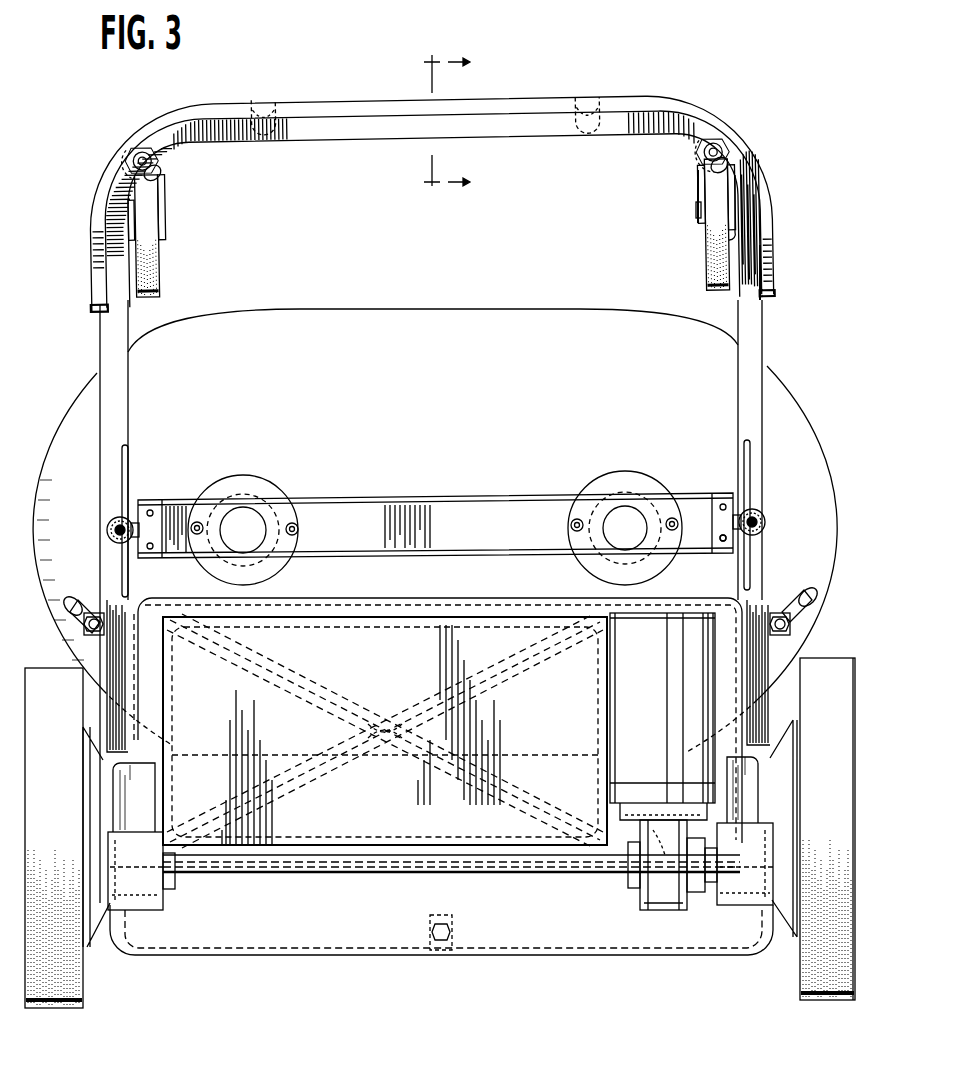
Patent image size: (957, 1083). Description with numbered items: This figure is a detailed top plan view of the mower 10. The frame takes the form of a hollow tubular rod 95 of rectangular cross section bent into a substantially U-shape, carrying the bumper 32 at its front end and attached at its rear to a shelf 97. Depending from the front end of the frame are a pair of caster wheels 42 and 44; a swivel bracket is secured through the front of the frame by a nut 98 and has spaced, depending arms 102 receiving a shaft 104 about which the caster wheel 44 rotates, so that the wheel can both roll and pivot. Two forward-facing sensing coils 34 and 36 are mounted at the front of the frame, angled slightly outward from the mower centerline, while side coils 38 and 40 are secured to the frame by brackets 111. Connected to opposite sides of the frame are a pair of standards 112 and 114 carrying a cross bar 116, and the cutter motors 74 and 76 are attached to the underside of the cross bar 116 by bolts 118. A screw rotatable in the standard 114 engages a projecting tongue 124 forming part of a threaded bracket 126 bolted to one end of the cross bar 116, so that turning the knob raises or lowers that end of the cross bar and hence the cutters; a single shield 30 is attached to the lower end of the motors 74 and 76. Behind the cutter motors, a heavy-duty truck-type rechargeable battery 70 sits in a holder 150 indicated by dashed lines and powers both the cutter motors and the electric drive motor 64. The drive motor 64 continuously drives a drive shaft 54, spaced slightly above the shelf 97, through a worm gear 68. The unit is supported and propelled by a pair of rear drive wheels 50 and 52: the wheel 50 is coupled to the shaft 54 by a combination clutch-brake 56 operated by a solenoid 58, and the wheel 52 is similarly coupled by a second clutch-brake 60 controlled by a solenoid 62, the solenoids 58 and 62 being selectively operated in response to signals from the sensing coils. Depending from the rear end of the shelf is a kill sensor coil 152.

The mower 10 is at (794, 92).
The shield 30 is at (792, 395).
The bumper 32 is at (497, 103).
The sensing coil 34 is at (277, 122).
The sensing coil 36 is at (578, 128).
The side coil 38 is at (92, 610).
The side coil 40 is at (788, 608).
The caster wheel 42 is at (158, 282).
The caster wheel 44 is at (710, 266).
The rear drive wheel 50 is at (76, 1010).
The rear drive wheel 52 is at (812, 968).
The drive shaft 54 is at (578, 880).
The clutch-brake 56 is at (164, 902).
The solenoid 58 is at (144, 806).
The clutch-brake 60 is at (743, 900).
The solenoid 62 is at (750, 801).
The electric drive motor 64 is at (652, 691).
The worm gear 68 is at (670, 900).
The rechargeable battery 70 is at (539, 720).
The cutter motor 74 is at (274, 492).
The cutter motor 76 is at (666, 490).
The hollow tubular rod 95 is at (752, 264).
The shelf 97 is at (696, 956).
The nut 98 is at (722, 160).
The depending arms 102 is at (700, 183).
The shaft 104 is at (698, 224).
The bracket 111 is at (80, 640).
The standard 112 is at (133, 482).
The standard 114 is at (752, 468).
The cross bar 116 is at (486, 502).
The bolts 118 is at (196, 522).
The projecting tongue 124 is at (742, 488).
The bracket 126 is at (723, 542).
The holder 150 is at (388, 708).
The kill sensor coil 152 is at (454, 938).